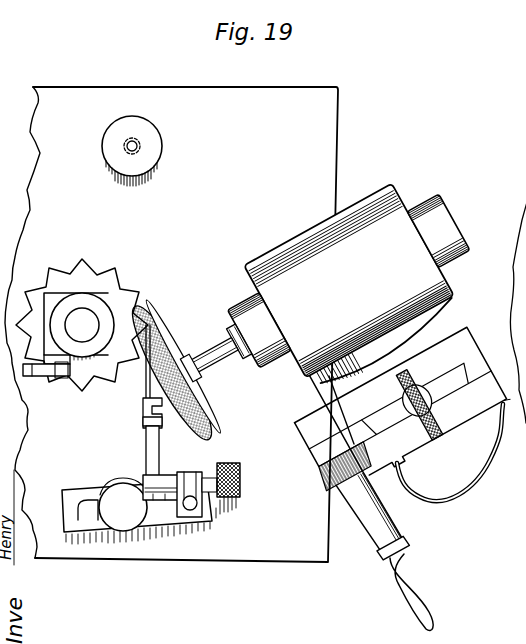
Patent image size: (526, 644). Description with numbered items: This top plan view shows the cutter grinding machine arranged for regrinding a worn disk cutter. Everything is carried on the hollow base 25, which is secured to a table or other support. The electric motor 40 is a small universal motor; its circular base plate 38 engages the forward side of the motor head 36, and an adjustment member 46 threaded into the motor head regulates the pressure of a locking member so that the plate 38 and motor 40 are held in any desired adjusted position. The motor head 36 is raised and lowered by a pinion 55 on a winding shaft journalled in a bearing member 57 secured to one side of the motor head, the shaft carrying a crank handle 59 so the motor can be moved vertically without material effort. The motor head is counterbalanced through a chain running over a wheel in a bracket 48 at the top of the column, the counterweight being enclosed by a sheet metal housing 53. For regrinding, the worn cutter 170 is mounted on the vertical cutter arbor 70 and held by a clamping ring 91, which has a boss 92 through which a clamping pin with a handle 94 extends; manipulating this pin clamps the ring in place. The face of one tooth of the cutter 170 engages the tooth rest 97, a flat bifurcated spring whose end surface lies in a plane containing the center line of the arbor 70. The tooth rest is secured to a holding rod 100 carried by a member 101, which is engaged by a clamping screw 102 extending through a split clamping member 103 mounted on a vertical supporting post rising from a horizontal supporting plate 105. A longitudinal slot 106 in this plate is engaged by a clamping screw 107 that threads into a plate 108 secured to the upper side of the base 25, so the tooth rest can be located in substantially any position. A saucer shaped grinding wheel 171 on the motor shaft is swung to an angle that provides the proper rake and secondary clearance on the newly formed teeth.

The hollow base 25 is at (323, 142).
The motor head 36 is at (463, 347).
The circular base plate 38 is at (443, 320).
The electric motor 40 is at (361, 208).
The adjustment member 46 is at (430, 447).
The bracket 48 is at (410, 442).
The sheet metal housing 53 is at (486, 471).
The pinion 55 is at (325, 485).
The bearing member 57 is at (315, 420).
The crank handle 59 is at (382, 552).
The cutter arbor 70 is at (85, 313).
The clamping ring 91 is at (105, 313).
The boss 92 is at (50, 322).
The handle 94 is at (37, 375).
The tooth rest 97 is at (145, 375).
The holding rod 100 is at (155, 440).
The member 101 is at (162, 480).
The clamping screw 102 is at (238, 482).
The split clamping member 103 is at (215, 518).
The horizontal supporting plate 105 is at (65, 489).
The longitudinal slot 106 is at (85, 518).
The clamping screw 107 is at (120, 495).
The plate 108 is at (152, 145).
The cutter 170 is at (98, 280).
The saucer shaped grinding wheel 171 is at (170, 325).